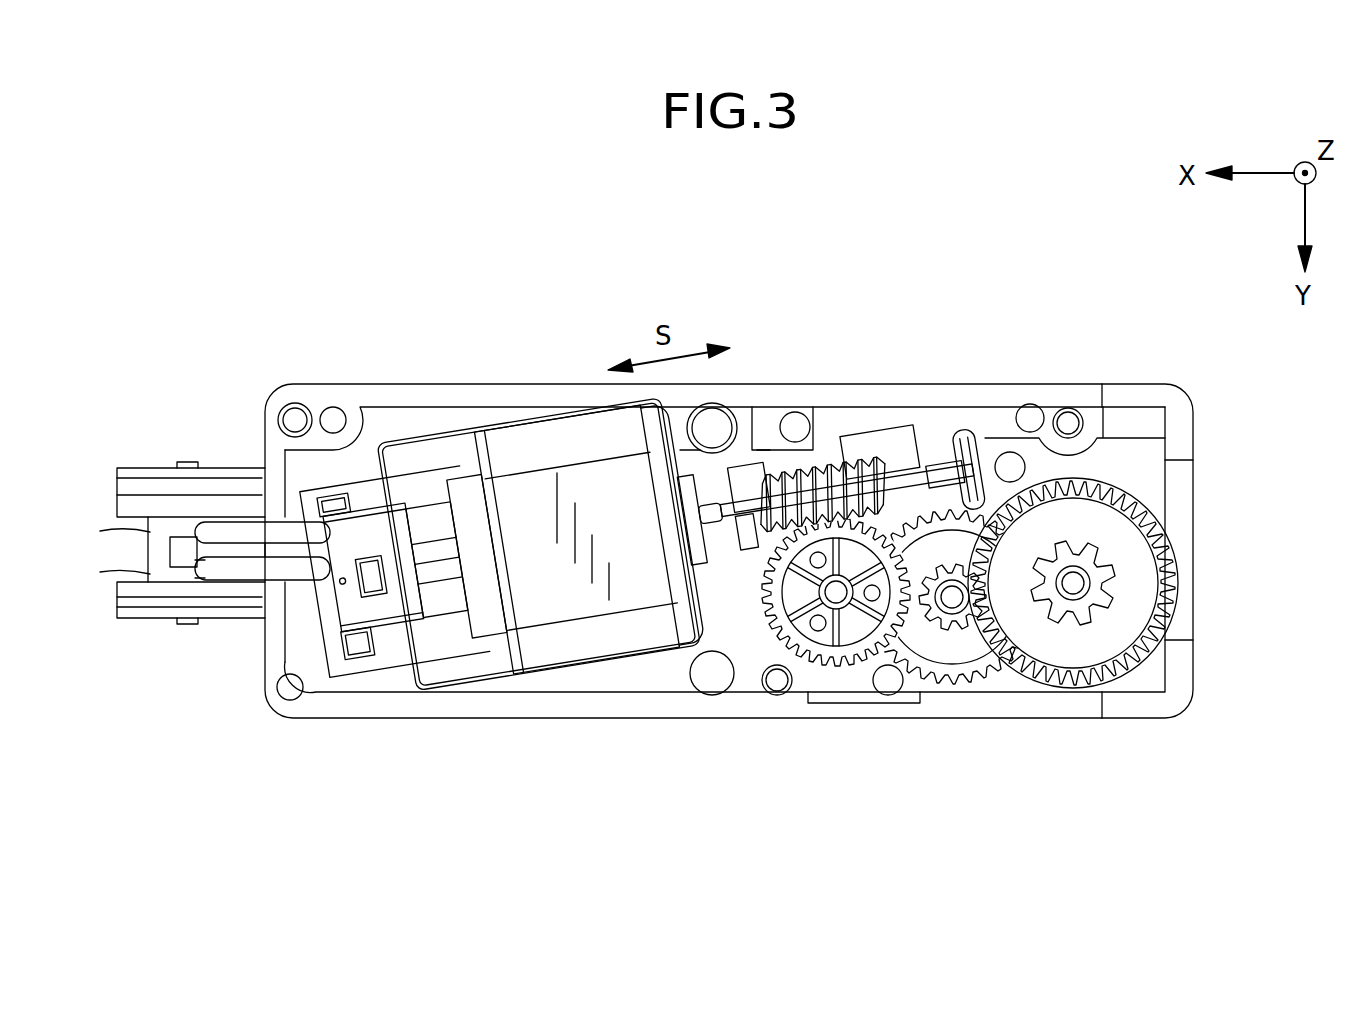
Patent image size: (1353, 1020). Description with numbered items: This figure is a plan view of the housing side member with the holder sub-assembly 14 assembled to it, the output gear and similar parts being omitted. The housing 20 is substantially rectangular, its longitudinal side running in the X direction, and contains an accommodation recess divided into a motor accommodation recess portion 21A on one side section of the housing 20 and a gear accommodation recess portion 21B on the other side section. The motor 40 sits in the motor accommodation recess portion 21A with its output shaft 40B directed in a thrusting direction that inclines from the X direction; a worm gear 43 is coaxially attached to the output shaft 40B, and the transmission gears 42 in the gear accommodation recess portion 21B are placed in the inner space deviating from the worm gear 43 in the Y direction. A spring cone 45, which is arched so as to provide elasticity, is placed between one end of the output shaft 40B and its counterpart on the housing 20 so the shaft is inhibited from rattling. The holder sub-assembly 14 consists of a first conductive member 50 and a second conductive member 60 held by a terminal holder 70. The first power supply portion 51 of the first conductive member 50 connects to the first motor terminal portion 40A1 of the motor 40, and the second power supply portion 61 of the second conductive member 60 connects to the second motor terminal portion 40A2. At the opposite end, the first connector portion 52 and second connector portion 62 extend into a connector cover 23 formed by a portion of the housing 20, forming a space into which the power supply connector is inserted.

The holder sub-assembly 14 is at (318, 630).
The housing 20 is at (1163, 380).
The motor accommodation recess portion 21A is at (597, 678).
The gear accommodation recess portion 21B is at (1127, 448).
The connector cover 23 is at (142, 466).
The motor 40 is at (570, 482).
The first motor terminal portion 40A1 is at (437, 610).
The second motor terminal portion 40A2 is at (425, 520).
The output shaft 40B is at (903, 488).
The transmission gears 42 is at (846, 668).
The worm gear 43 is at (835, 462).
The spring cone 45 is at (958, 448).
The first conductive member 50 is at (237, 584).
The first power supply portion 51 is at (428, 600).
The first connector portion 52 is at (210, 571).
The second conductive member 60 is at (240, 515).
The second power supply portion 61 is at (430, 517).
The second connector portion 62 is at (208, 531).
The terminal holder 70 is at (367, 612).